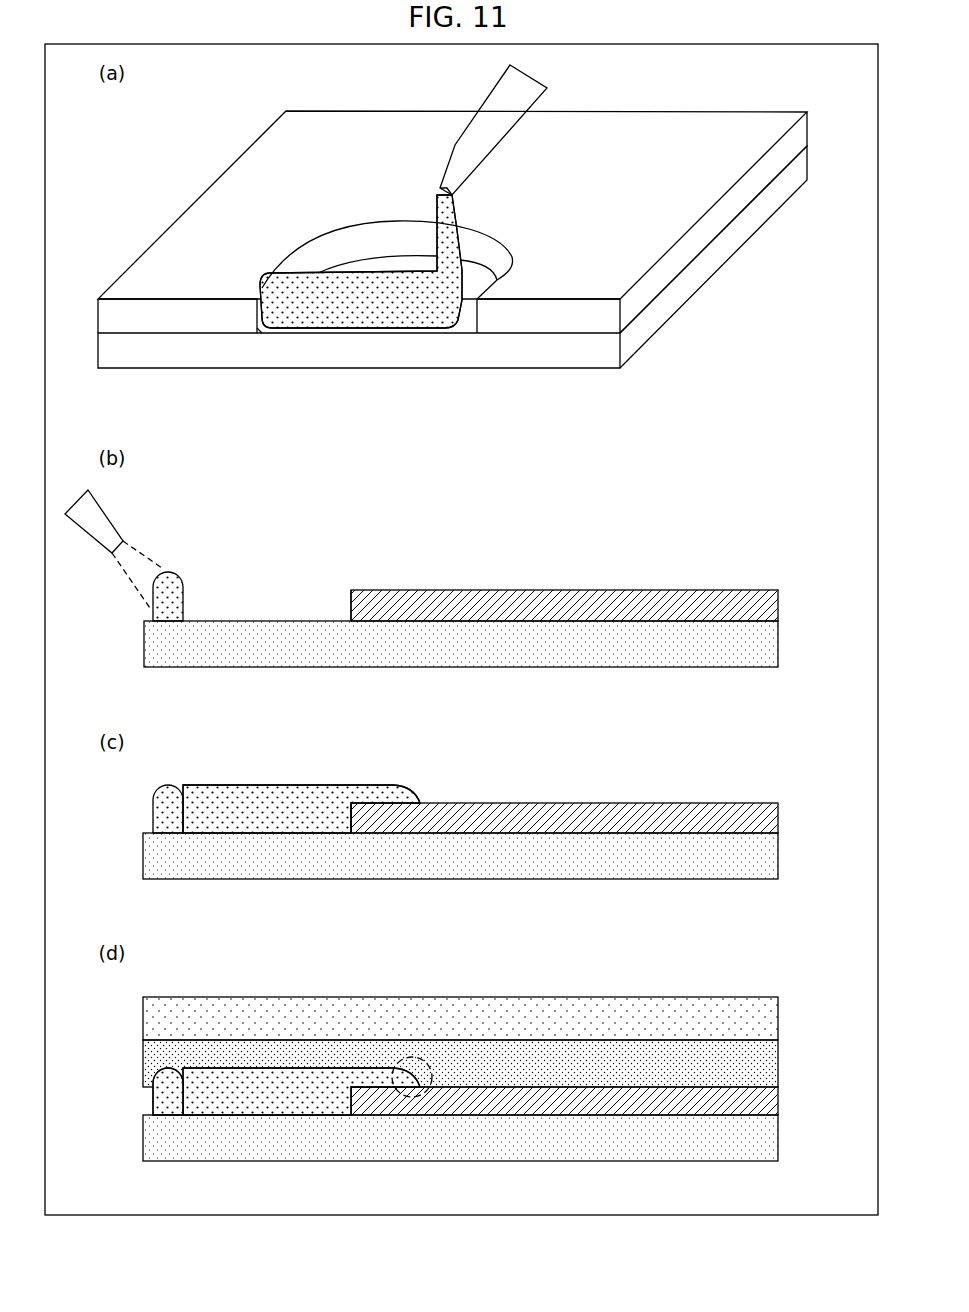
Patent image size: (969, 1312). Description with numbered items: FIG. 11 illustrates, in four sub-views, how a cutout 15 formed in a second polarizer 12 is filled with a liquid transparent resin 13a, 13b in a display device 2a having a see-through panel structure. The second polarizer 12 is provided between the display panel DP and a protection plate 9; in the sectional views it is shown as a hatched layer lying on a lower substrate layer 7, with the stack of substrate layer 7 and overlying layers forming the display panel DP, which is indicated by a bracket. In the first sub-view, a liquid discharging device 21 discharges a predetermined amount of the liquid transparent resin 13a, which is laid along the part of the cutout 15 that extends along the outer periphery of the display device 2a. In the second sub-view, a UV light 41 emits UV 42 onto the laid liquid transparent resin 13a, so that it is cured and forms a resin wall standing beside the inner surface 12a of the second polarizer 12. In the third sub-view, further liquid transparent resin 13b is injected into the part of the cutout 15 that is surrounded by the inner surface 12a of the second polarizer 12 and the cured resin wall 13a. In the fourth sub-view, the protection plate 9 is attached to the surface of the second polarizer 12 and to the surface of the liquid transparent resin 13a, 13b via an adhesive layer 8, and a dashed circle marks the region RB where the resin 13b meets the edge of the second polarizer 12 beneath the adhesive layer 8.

The substrate 7 is at (797, 170).
The second polarizer 12 is at (797, 137).
The adhesive layer 8 is at (765, 1067).
The protection plate 9 is at (765, 1022).
The liquid transparent resin 13a is at (356, 312).
The liquid transparent resin 13b is at (270, 797).
The cutout 15 is at (380, 227).
The liquid discharging device 21 is at (500, 96).
The UV light 41 is at (96, 537).
The UV 42 is at (130, 582).
The inner surface 12a is at (351, 606).
The rounded boundary region RB is at (411, 1056).
The display device 2a is at (718, 992).
The display panel DP is at (817, 1128).